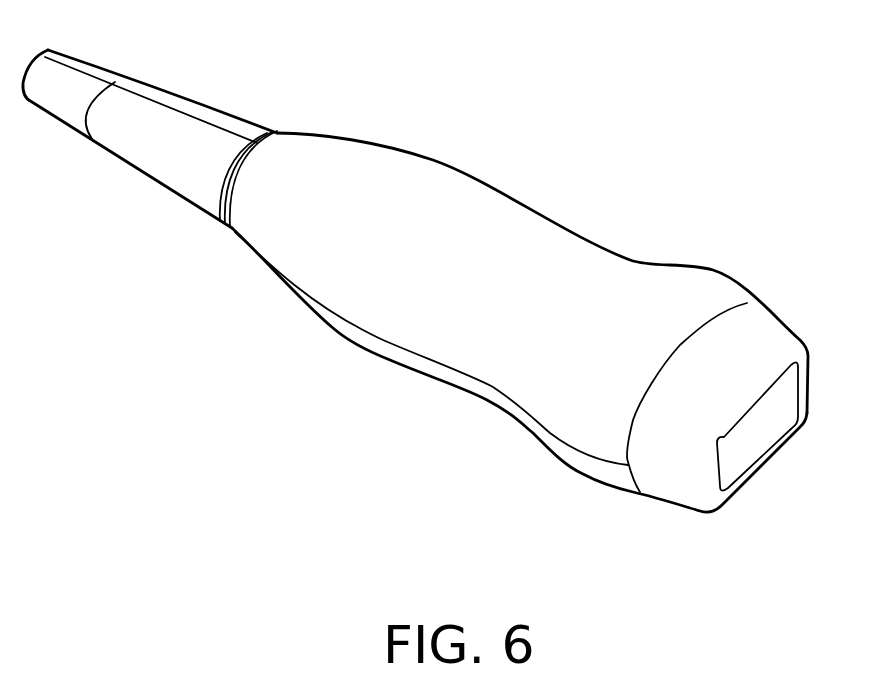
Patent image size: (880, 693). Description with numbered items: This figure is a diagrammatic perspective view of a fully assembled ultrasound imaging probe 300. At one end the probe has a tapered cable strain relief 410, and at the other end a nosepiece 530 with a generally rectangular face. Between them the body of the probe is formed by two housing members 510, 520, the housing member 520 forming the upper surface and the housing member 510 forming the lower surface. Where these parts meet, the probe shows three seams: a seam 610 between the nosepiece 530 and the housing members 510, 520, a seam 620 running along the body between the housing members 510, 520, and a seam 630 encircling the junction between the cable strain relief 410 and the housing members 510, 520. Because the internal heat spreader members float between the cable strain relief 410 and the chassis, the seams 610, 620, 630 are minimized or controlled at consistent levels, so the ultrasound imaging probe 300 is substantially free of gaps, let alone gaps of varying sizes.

The ultrasound imaging probe 300 is at (763, 85).
The cable strain relief 410 is at (167, 125).
The seam 630 is at (227, 228).
The housing member 520 is at (477, 173).
The housing member 510 is at (540, 440).
The seam 620 is at (390, 343).
The seam 610 is at (693, 337).
The nosepiece 530 is at (780, 345).